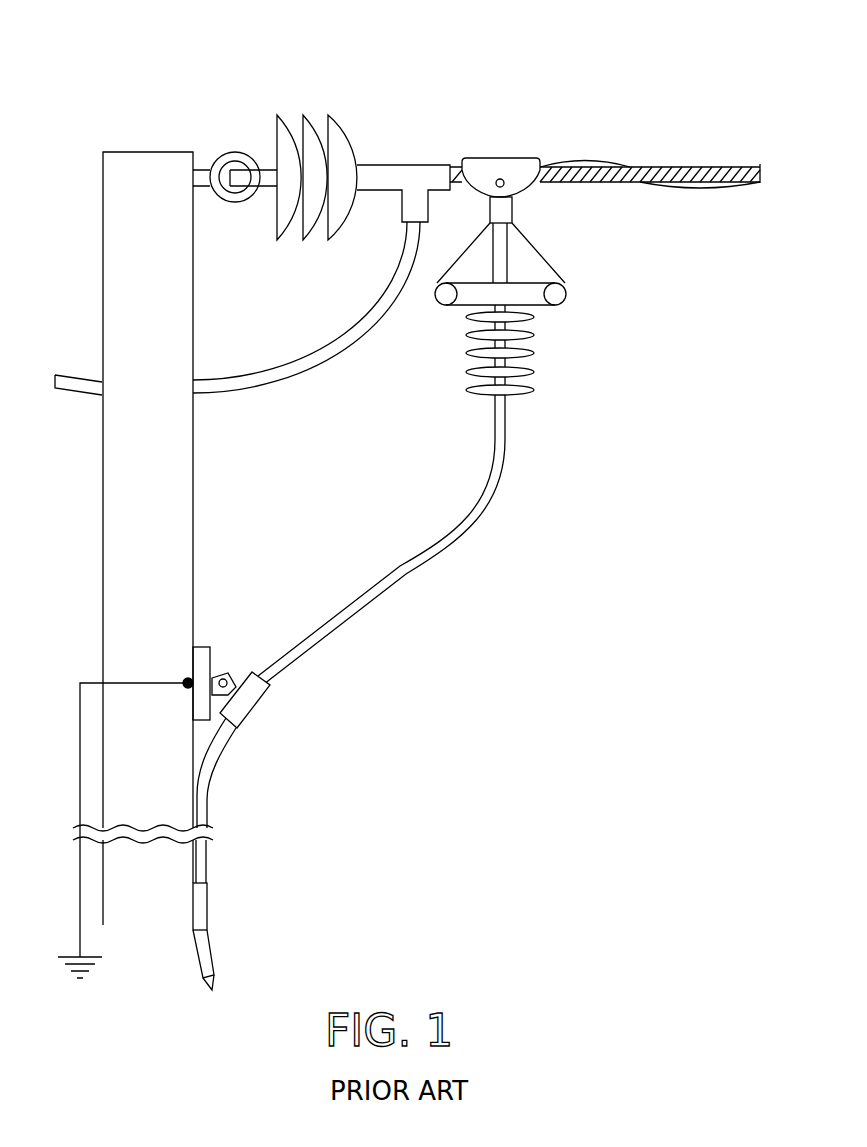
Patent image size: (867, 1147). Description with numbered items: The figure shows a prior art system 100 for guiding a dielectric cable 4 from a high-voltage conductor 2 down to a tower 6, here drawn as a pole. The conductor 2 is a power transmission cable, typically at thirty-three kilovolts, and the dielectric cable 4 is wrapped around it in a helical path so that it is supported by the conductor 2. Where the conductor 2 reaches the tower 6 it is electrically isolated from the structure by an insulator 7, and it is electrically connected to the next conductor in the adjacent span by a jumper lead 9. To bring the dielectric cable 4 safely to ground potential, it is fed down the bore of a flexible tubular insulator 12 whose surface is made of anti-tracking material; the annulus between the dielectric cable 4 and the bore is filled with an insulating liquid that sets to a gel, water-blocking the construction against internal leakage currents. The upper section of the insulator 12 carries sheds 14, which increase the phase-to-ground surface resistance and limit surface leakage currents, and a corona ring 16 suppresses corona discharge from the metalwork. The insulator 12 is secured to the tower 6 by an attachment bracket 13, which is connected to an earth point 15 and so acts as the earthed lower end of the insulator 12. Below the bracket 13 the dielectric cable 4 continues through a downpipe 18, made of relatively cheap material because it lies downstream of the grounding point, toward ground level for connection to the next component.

The prior art system 100 is at (137, 66).
The conductor 2 is at (648, 168).
The dielectric cable 4 is at (690, 186).
The tower 6 is at (115, 230).
The insulator 7 is at (333, 122).
The jumper lead 9 is at (305, 349).
The insulator 12 is at (447, 545).
The attachment bracket 13 is at (233, 675).
The sheds 14 is at (536, 388).
The earth point 15 is at (70, 957).
The corona ring 16 is at (566, 291).
The downpipe 18 is at (213, 957).